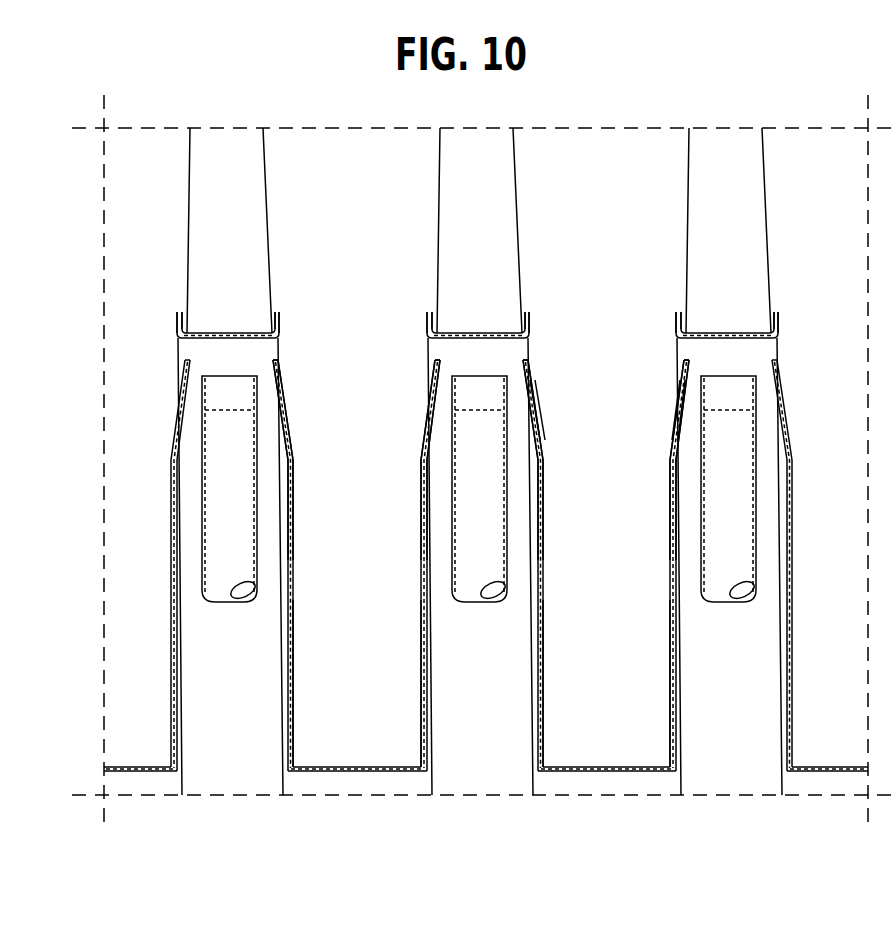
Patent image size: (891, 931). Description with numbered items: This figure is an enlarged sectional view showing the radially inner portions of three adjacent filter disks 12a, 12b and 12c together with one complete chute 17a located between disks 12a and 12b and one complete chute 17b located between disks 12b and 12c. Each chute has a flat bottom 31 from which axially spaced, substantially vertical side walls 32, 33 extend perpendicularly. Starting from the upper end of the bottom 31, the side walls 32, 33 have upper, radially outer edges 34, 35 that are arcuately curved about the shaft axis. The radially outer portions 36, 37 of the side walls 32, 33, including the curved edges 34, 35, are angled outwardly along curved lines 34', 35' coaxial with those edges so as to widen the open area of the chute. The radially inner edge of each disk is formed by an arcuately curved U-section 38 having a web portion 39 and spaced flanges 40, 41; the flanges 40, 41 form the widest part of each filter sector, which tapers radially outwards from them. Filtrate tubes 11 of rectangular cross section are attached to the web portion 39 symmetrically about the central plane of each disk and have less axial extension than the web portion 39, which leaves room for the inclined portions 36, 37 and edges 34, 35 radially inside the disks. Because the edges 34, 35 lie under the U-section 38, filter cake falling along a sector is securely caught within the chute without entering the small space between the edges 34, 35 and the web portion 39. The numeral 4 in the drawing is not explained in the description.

The flange 4 is at (513, 317).
The filtrate tube 11 is at (230, 568).
The filter disk 12a is at (211, 222).
The filter disk 12b is at (461, 222).
The filter disk 12c is at (711, 222).
The chute 17a is at (362, 782).
The chute 17b is at (614, 782).
The bottom 31 is at (352, 765).
The side wall 32 is at (294, 601).
The side wall 33 is at (418, 605).
The upper radially outer edge 34 is at (426, 410).
The curved line 34' is at (438, 498).
The upper radially outer edge 35 is at (526, 394).
The curved line 35' is at (521, 508).
The radially outer portion 36 is at (537, 402).
The radially outer portion 37 is at (676, 412).
The U-section 38 is at (243, 314).
The web portion 39 is at (196, 349).
The flange 40 is at (178, 330).
The flange 41 is at (282, 318).